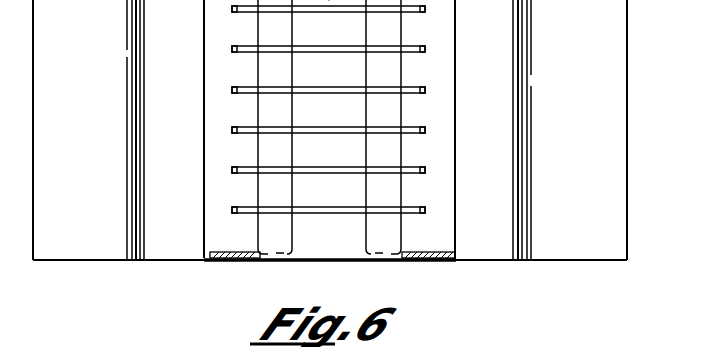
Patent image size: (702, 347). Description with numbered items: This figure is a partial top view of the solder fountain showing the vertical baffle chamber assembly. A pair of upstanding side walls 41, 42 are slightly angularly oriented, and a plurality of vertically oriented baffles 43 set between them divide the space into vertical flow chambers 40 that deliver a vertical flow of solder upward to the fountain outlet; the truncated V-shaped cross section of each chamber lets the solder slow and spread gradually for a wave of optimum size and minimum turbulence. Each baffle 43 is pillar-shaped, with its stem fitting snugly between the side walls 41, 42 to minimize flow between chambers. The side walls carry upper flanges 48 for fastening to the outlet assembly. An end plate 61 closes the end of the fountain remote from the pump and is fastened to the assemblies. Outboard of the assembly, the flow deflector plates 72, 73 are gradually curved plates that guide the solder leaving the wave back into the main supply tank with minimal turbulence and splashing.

The vertical flow chambers 40 is at (310, 195).
The upstanding side wall 41 is at (272, 243).
The upstanding side wall 42 is at (387, 242).
The baffle 43 is at (347, 213).
The upper flange 48 is at (215, 227).
The end plate 61 is at (437, 258).
The flow deflector plate 72 is at (81, 240).
The flow deflector plate 73 is at (593, 240).